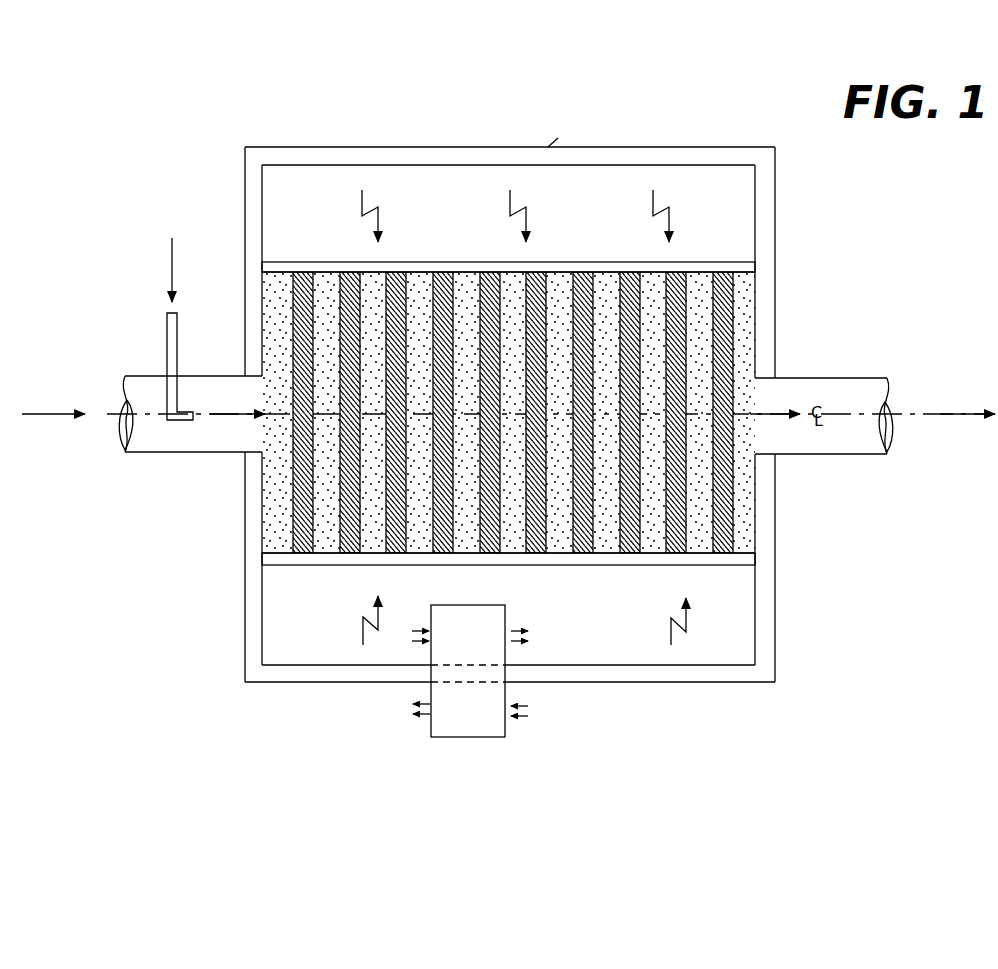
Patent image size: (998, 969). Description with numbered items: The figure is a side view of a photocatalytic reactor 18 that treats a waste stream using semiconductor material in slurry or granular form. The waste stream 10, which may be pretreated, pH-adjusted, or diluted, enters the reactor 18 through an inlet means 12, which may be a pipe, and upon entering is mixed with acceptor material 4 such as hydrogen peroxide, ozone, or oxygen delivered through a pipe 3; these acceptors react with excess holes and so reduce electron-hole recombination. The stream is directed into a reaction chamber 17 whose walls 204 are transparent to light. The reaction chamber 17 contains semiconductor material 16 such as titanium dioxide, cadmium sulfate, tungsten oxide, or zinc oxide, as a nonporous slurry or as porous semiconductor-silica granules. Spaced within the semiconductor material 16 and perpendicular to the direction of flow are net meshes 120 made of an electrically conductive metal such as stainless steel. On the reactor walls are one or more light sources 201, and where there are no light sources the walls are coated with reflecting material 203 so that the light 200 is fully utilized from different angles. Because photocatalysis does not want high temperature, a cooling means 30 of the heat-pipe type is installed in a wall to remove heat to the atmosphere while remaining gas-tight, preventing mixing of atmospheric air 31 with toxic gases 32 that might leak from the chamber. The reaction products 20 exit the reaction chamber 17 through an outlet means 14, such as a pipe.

The pipe 3 is at (167, 352).
The acceptor material 4 is at (172, 276).
The waste stream 10 is at (45, 416).
The inlet means 12 is at (186, 455).
The outlet means 14 is at (843, 458).
The semiconductor material 16 is at (330, 513).
The reaction chamber 17 is at (296, 268).
The reactor 18 is at (776, 582).
The reaction products 20 is at (963, 418).
The cooling means 30 is at (465, 740).
The atmospheric air 31 is at (473, 713).
The toxic gases 32 is at (472, 640).
The net meshes 120 is at (675, 380).
The light 200 is at (672, 212).
The light sources 201 is at (600, 162).
The reflecting material 203 is at (602, 674).
The walls 204 is at (577, 269).